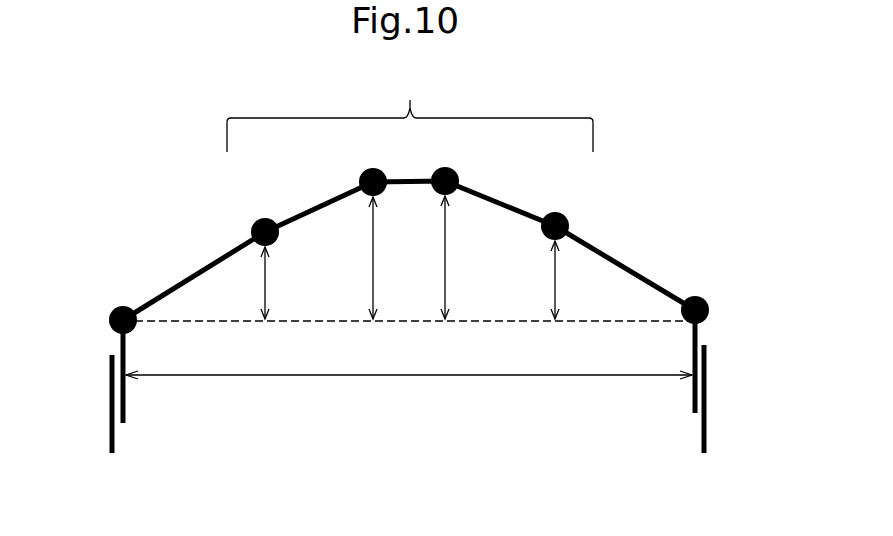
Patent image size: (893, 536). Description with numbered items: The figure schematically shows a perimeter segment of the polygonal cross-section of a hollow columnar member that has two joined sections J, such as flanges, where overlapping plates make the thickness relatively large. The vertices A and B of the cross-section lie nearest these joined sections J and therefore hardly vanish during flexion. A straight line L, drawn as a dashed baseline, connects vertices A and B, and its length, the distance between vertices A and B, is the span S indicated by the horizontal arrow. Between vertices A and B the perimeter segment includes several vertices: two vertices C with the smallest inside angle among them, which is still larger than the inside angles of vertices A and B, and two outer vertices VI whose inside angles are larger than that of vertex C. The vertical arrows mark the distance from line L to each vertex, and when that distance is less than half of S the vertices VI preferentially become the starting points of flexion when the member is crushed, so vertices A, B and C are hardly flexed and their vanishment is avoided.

The vertex A is at (117, 354).
The vertex B is at (702, 343).
The vertex C is at (409, 171).
The vertex V(I) VI is at (409, 218).
The straight line L is at (305, 326).
The length S is at (409, 364).
The joined section J is at (106, 377).